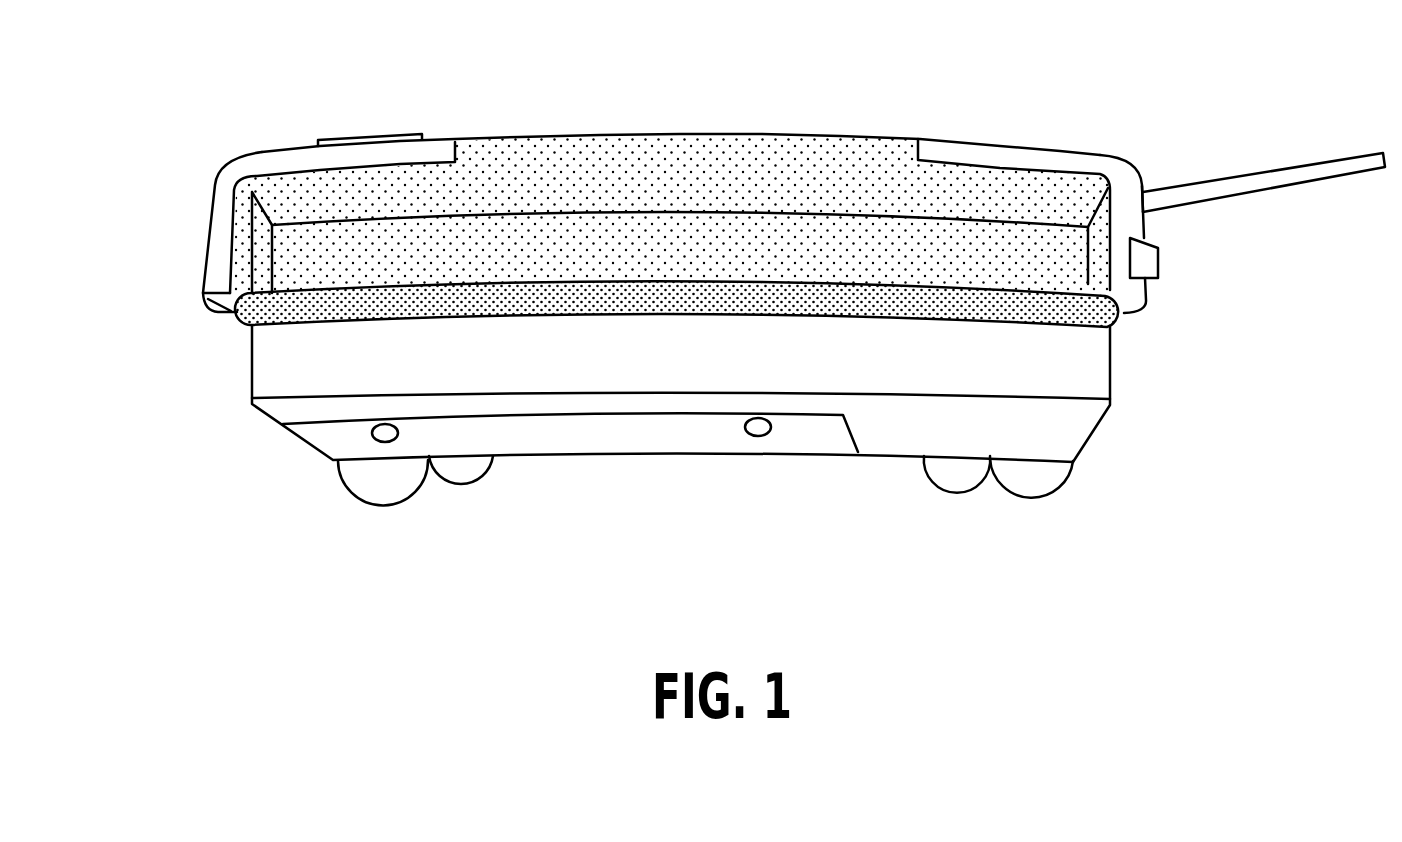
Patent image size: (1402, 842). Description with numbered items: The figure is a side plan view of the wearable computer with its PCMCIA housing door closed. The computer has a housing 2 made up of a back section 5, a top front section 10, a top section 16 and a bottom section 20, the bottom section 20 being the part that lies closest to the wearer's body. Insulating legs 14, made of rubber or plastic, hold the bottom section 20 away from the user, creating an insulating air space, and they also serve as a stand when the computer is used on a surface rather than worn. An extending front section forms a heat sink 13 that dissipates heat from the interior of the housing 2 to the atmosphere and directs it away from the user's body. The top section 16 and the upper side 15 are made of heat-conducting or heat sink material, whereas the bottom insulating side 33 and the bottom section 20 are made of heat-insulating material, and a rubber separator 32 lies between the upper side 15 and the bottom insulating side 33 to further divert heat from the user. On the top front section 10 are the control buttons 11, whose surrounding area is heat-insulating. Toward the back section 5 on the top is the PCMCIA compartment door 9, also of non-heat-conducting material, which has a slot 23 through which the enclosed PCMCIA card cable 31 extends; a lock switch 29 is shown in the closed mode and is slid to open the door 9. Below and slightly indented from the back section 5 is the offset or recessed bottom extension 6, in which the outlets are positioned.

The housing 2 is at (763, 147).
The back section 5 is at (1143, 228).
The bottom extension 6 is at (1112, 340).
The PCMCIA compartment door 9 is at (1035, 147).
The top front section 10 is at (220, 187).
The control buttons 11 is at (370, 137).
The heat sink 13 is at (210, 305).
The legs 14 is at (370, 482).
The upper side 15 is at (562, 245).
The top section 16 is at (650, 132).
The bottom section 20 is at (740, 445).
The slot 23 is at (1143, 189).
The lock switch 29 is at (1160, 263).
The PCMCIA card cable 31 is at (1322, 160).
The rubber separator 32 is at (1060, 313).
The bottom insulating side 33 is at (292, 362).